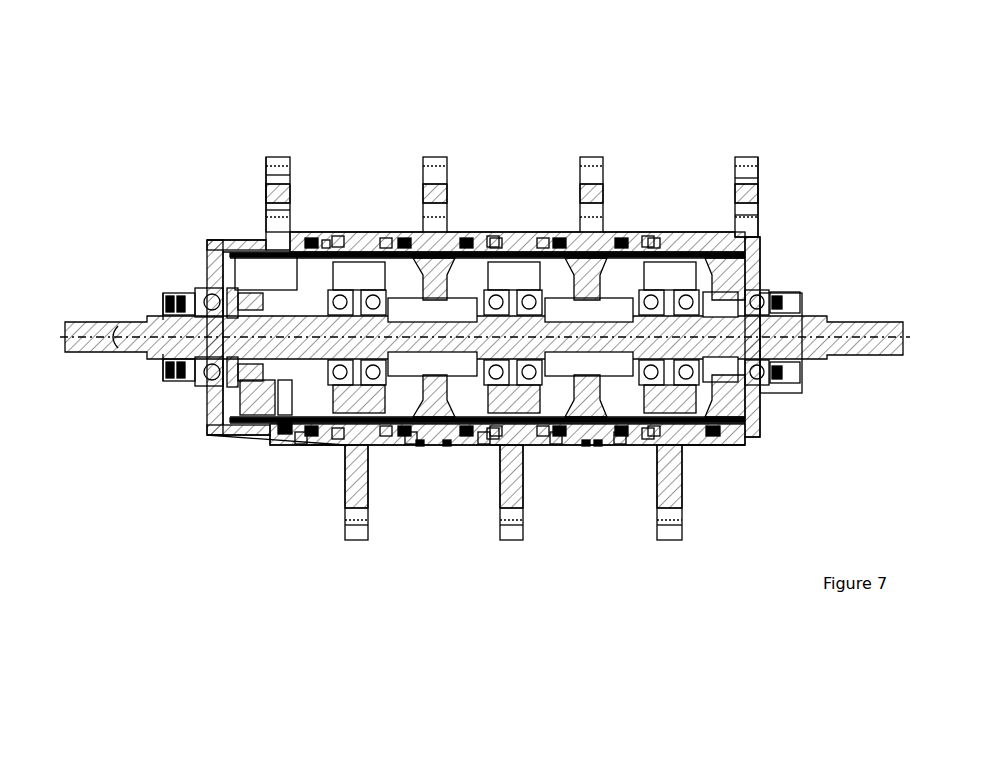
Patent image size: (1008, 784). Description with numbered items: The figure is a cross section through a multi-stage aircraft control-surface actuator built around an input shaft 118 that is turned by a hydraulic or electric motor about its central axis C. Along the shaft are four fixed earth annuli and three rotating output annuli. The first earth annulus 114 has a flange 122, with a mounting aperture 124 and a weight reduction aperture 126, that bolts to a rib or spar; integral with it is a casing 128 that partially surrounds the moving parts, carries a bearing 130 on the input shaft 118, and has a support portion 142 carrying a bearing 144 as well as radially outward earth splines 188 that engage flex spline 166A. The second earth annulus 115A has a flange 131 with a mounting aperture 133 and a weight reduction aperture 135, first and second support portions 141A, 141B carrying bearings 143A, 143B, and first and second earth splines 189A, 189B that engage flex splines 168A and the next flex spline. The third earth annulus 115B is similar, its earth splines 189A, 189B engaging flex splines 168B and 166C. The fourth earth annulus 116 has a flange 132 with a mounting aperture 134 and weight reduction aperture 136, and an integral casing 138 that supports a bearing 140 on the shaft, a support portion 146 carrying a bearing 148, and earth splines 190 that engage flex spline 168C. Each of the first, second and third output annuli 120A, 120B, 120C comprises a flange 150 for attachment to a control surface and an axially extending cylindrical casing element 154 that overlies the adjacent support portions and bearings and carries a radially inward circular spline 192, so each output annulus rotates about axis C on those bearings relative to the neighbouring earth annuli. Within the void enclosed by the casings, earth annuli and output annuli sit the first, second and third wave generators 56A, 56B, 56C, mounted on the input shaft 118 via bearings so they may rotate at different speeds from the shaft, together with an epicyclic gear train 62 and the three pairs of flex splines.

The first earth annulus 114 is at (278, 148).
The second earth annulus 115A is at (437, 148).
The third earth annulus 115B is at (581, 150).
The fourth earth annulus 116 is at (742, 148).
The input shaft 118 is at (63, 335).
The central axis C is at (100, 351).
The first output annulus 120A is at (352, 555).
The second output annulus 120B is at (513, 555).
The third output annulus 120C is at (677, 555).
The flange 122 is at (266, 157).
The mounting aperture 124 is at (278, 174).
The weight reduction aperture 126 is at (277, 208).
The casing 128 is at (213, 258).
The bearing 130 is at (168, 375).
The flange 131 is at (423, 210).
The flange 132 is at (760, 157).
The mounting aperture 133 is at (445, 173).
The mounting aperture 134 is at (752, 177).
The weight reduction aperture 135 is at (405, 232).
The weight reduction aperture 136 is at (757, 217).
The casing 138 is at (768, 285).
The bearing 140 is at (800, 371).
The first support portion 141A is at (396, 242).
The second support portion 141B is at (470, 238).
The support portion 142 is at (327, 236).
The bearing 143A is at (382, 240).
The bearing 143B is at (492, 238).
The bearing 144 is at (317, 236).
The support portion 146 is at (715, 245).
The bearing 148 is at (705, 237).
The flange 150 is at (345, 536).
The casing element 154 is at (342, 447).
The flex spline 166A is at (302, 445).
The flex spline 166C is at (617, 440).
The flex spline 168A is at (410, 447).
The flex spline 168B is at (553, 440).
The flex spline 168C is at (752, 412).
The earth splines 188 is at (280, 440).
The first earth splines 189A is at (419, 447).
The second earth splines 189B is at (447, 453).
The earth splines 190 is at (757, 403).
The circular spline 192 is at (352, 234).
The first wave generator 56A is at (341, 284).
The second wave generator 56B is at (496, 284).
The third wave generator 56C is at (652, 284).
The epicyclic gear train 62 is at (249, 284).